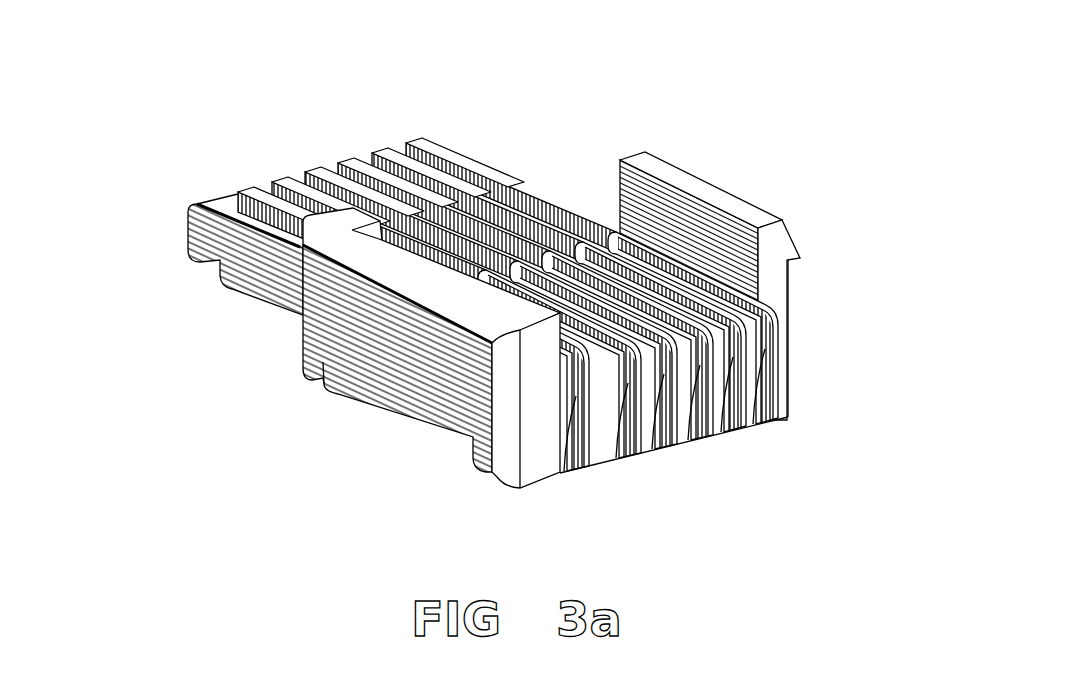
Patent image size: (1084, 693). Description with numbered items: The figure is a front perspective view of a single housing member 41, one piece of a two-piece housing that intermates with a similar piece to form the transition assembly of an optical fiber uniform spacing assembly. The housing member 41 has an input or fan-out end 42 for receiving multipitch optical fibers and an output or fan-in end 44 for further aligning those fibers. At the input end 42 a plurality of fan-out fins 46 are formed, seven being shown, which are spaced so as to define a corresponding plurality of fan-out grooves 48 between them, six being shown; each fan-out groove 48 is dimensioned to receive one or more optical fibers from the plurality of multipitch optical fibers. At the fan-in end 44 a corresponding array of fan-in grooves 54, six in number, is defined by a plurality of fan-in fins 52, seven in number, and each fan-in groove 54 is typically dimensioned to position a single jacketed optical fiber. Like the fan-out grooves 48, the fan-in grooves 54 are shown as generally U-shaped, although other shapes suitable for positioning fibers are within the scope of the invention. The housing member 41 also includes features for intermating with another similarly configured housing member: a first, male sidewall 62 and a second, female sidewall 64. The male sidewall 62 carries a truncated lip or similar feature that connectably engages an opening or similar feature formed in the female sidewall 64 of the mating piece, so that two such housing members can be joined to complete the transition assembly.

The housing member 41 is at (493, 289).
The input or fan-out end 42 is at (540, 309).
The output or fan-in end 44 is at (182, 217).
The fan-out fins 46 is at (617, 432).
The fan-out grooves 48 is at (697, 427).
The fan-in fins 52 is at (258, 188).
The fan-in grooves 54 is at (472, 309).
The first, male sidewall 62 is at (715, 193).
The second, female sidewall 64 is at (423, 403).